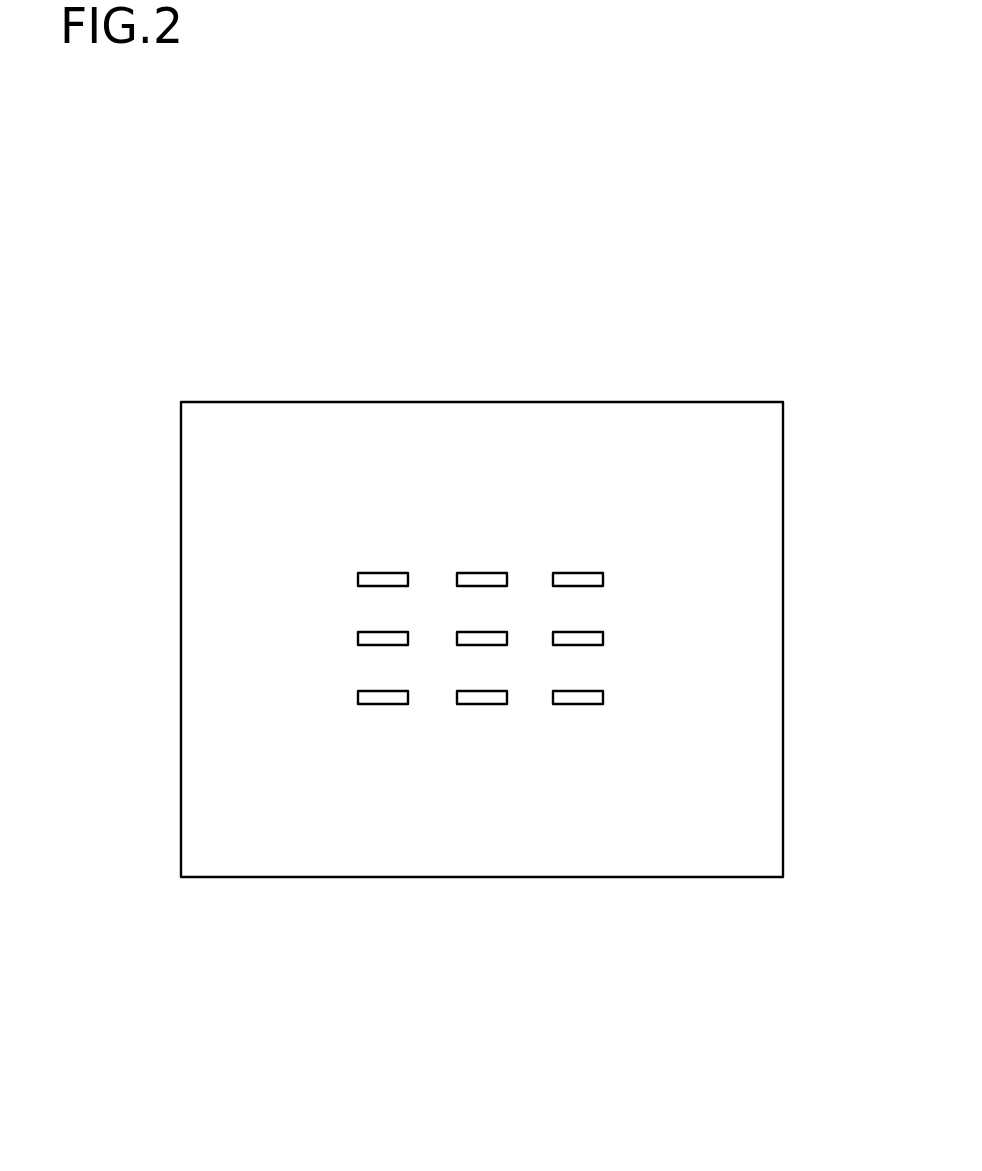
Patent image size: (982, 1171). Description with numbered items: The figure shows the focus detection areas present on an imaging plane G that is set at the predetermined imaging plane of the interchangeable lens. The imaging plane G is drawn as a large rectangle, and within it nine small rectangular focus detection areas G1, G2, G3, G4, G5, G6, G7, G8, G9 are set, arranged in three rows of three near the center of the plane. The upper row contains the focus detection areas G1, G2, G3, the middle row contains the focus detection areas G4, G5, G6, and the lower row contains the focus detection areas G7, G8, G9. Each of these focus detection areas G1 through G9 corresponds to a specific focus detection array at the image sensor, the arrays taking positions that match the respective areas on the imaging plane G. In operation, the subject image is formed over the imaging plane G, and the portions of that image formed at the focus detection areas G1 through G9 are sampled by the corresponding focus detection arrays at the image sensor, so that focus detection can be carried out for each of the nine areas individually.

The imaging plane G is at (252, 428).
The focus detection area G1 is at (388, 573).
The focus detection area G2 is at (481, 573).
The focus detection area G3 is at (571, 573).
The focus detection area G4 is at (358, 638).
The focus detection area G5 is at (457, 643).
The focus detection area G6 is at (603, 638).
The focus detection area G7 is at (390, 704).
The focus detection area G8 is at (482, 704).
The focus detection area G9 is at (573, 704).